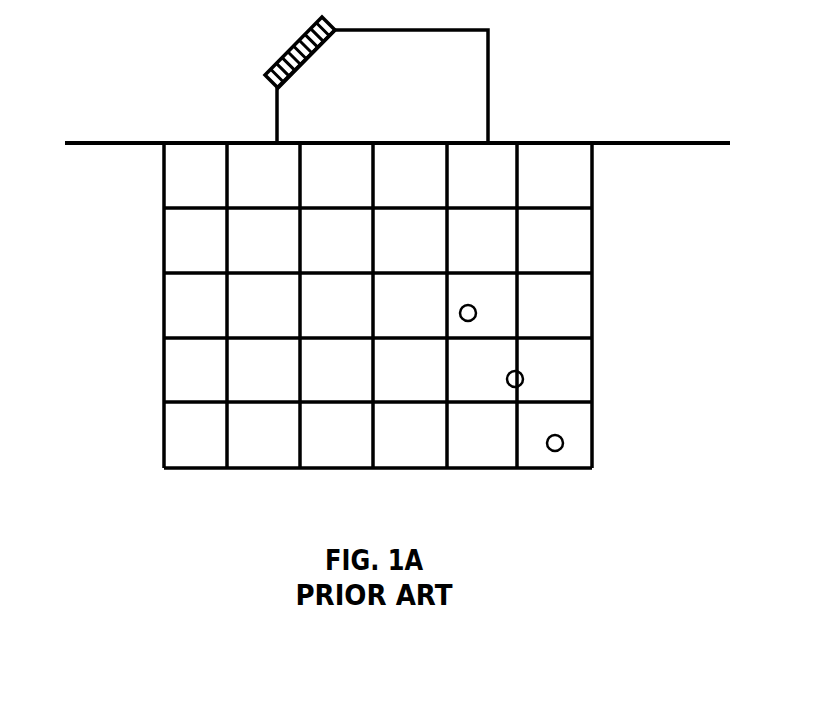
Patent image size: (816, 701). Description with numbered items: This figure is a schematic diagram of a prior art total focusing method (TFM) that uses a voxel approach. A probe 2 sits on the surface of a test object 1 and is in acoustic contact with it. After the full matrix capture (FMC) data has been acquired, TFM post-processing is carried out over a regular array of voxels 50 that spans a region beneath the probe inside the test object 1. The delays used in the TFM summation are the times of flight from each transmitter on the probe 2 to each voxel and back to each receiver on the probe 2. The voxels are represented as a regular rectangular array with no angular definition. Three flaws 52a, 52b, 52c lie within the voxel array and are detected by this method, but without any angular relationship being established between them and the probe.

The test object 1 is at (687, 167).
The probe 2 is at (455, 78).
The regular array of voxels 50 is at (567, 242).
The flaw 52a is at (468, 313).
The flaw 52b is at (515, 379).
The flaw 52c is at (555, 443).